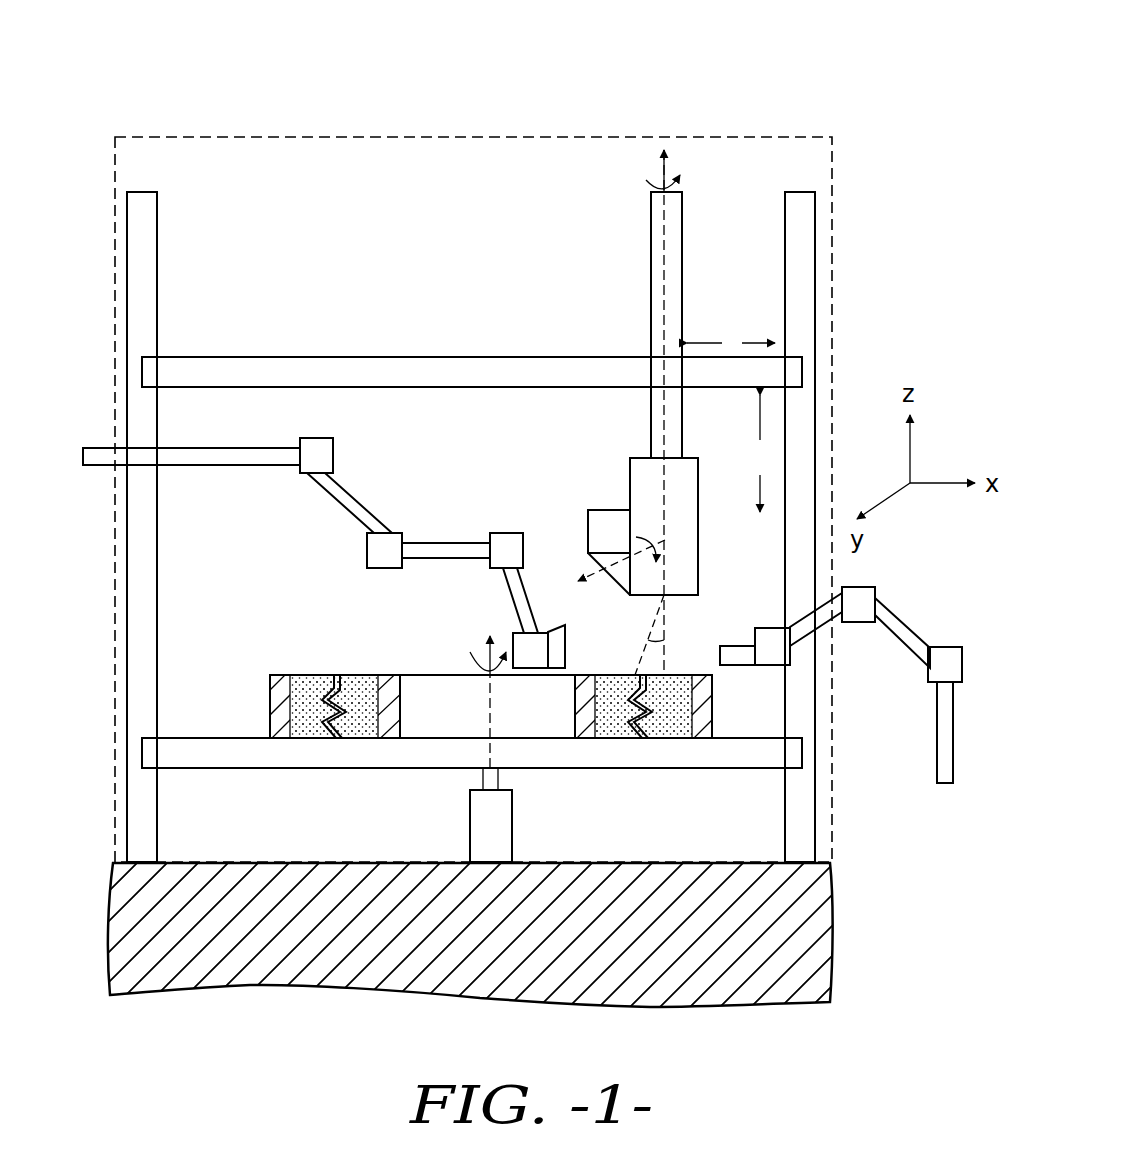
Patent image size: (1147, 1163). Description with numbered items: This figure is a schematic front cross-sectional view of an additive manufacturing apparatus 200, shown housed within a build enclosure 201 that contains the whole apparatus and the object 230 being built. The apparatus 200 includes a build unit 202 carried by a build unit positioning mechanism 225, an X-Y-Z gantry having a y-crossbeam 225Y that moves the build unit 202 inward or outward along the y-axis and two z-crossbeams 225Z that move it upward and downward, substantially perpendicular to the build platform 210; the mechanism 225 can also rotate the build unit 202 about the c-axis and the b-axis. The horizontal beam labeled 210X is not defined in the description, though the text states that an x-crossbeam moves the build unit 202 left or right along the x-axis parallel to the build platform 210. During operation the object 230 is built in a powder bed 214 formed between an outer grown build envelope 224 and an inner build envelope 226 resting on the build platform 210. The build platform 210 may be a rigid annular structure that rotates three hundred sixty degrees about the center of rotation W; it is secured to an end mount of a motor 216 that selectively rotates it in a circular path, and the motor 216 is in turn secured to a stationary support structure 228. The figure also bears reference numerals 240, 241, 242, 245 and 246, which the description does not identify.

The additive manufacturing apparatus 200 is at (473, 435).
The build enclosure 201 is at (296, 133).
The build unit 202 is at (637, 475).
The build platform 210 is at (740, 757).
The x-axis gantry beam 210X is at (802, 368).
The powder bed 214 is at (675, 677).
The motor 216 is at (497, 817).
The outer grown build envelope 224 is at (278, 708).
The build unit positioning mechanism 225 is at (533, 492).
The y-crossbeam 225Y is at (657, 278).
The z-crossbeam 225Z is at (142, 280).
The inner build envelope 226 is at (392, 692).
The stationary support structure 228 is at (792, 938).
The object 230 is at (337, 670).
The robotic arm 240 is at (537, 590).
The arm mount 241 is at (740, 648).
The end effector tool 242 is at (567, 633).
The arm link 245 is at (935, 738).
The arm joint 246 is at (333, 455).